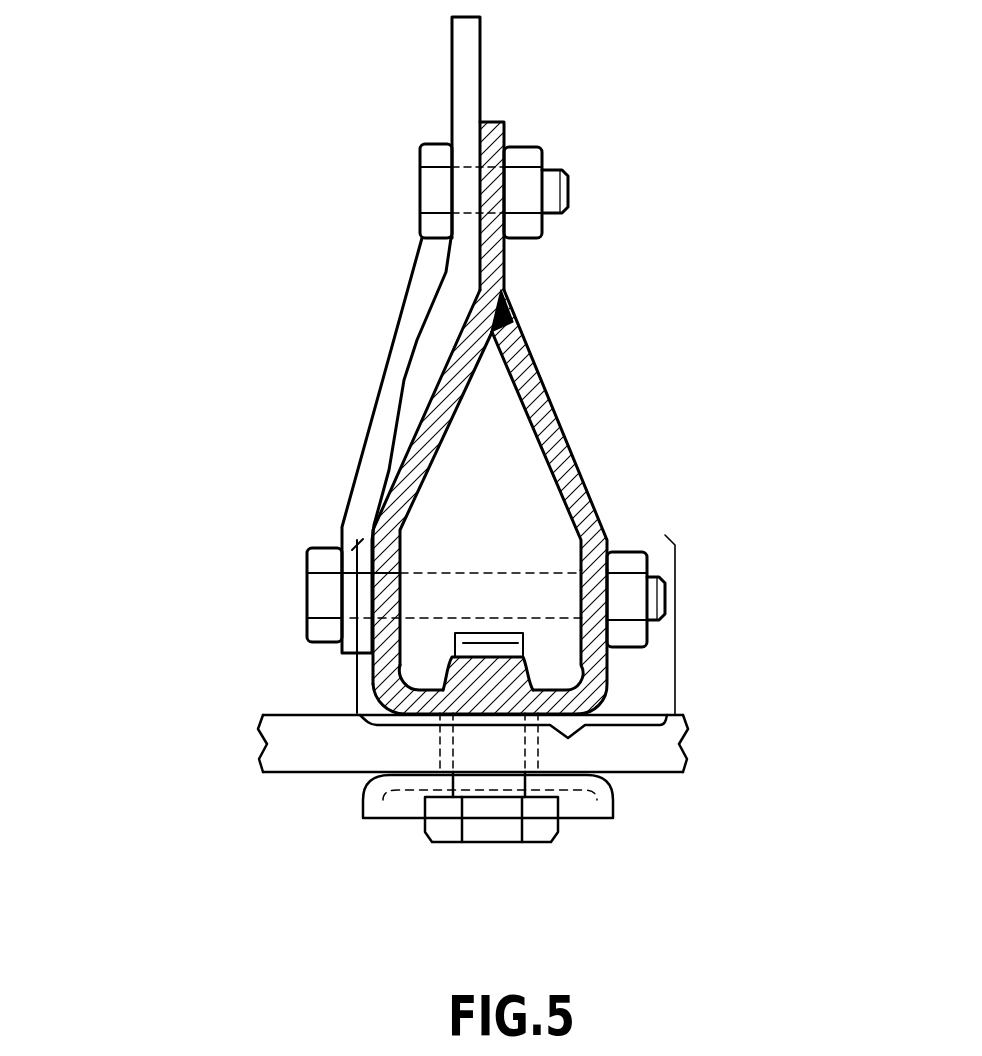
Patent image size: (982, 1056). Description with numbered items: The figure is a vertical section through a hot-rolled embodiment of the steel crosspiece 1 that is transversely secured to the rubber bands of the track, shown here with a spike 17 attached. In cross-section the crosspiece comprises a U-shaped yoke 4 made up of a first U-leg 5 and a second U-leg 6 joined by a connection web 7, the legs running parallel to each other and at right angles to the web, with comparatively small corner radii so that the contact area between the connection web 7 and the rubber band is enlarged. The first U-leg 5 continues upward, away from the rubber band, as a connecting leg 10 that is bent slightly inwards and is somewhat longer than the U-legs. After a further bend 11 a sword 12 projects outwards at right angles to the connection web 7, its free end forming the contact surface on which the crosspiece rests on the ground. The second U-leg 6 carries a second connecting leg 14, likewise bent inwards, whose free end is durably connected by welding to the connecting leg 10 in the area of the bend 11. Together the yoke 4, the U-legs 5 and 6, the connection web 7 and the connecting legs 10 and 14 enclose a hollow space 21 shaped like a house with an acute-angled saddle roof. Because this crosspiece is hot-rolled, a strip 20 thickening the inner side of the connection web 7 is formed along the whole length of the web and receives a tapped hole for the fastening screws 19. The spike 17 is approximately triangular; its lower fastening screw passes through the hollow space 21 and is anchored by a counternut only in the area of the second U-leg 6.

The steel crosspiece 1 is at (650, 175).
The U-shaped yoke 4 is at (473, 743).
The first U-leg 5 is at (382, 598).
The second U-leg 6 is at (597, 662).
The connection web 7 is at (380, 688).
The connecting leg 10 is at (440, 413).
The bend 11 is at (493, 292).
The sword 12 is at (502, 125).
The second connecting leg 14 is at (557, 448).
The spike 17 is at (467, 61).
The fastening screws 19 is at (500, 825).
The strip 20 is at (487, 667).
The hollow space 21 is at (505, 512).